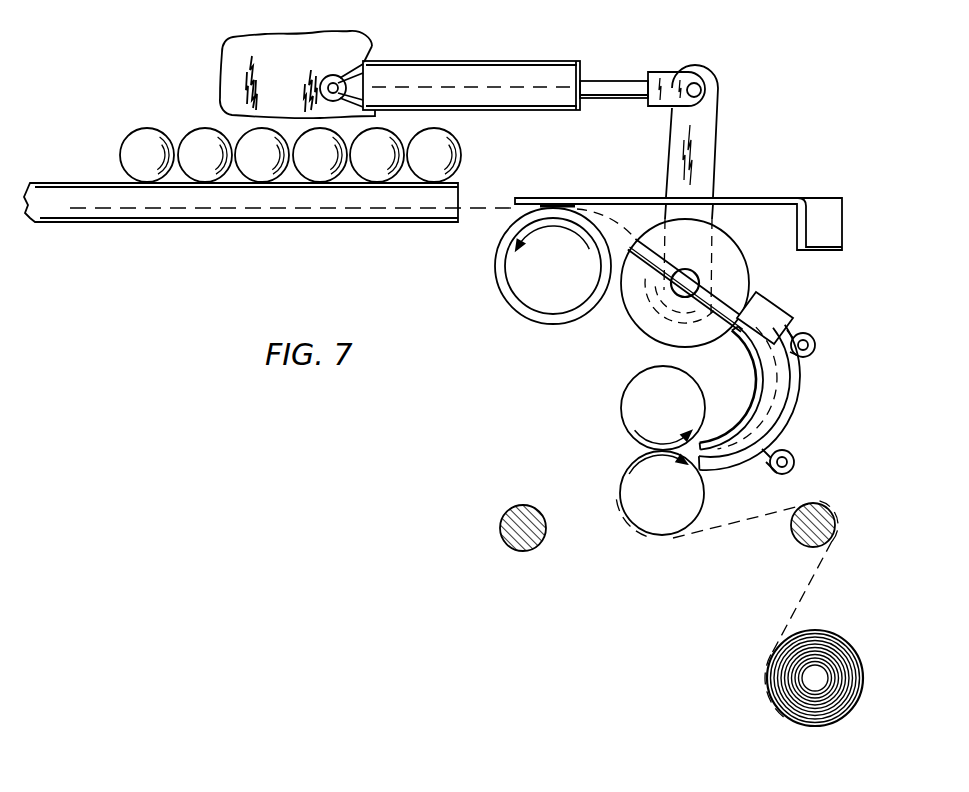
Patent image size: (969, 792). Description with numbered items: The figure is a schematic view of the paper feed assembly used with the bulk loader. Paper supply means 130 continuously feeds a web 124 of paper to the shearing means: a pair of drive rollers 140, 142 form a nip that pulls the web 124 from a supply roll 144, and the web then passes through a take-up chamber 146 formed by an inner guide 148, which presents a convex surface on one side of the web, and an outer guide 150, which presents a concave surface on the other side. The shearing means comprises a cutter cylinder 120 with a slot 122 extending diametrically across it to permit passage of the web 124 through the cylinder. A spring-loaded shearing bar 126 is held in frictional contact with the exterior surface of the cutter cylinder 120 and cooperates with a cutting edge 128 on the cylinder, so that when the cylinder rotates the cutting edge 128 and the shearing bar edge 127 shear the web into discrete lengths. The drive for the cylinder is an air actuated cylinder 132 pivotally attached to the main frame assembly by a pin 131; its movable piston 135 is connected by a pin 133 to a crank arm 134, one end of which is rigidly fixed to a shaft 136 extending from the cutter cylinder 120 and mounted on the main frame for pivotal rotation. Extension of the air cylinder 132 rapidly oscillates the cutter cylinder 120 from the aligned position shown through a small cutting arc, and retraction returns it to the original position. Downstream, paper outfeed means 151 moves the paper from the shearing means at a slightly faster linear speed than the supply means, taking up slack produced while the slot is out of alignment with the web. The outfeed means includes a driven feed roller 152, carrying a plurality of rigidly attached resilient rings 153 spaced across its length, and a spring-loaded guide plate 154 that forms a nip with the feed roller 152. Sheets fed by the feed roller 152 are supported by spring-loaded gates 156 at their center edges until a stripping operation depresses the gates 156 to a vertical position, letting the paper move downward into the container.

The cutter cylinder 120 is at (648, 325).
The slot 122 is at (638, 316).
The web 124 is at (808, 587).
The spring-loaded shearing bar 126 is at (812, 336).
The shearing bar edge 127 is at (770, 300).
The cutting edge 128 is at (731, 338).
The paper feeding means 130 is at (604, 449).
The pin 131 is at (360, 60).
The air actuated cylinder 132 is at (517, 60).
The pin 133 is at (702, 88).
The crank arm 134 is at (718, 170).
The movable piston 135 is at (615, 80).
The shaft 136 is at (727, 280).
The drive roller 140 is at (620, 416).
The drive roller 142 is at (703, 507).
The supply roll 144 is at (813, 723).
The take-up chamber 146 is at (792, 422).
The inner guide 148 is at (747, 403).
The outer guide 150 is at (797, 400).
The paper outfeed means 151 is at (502, 217).
The driven feed roller 152 is at (527, 312).
The resilient rings 153 is at (498, 290).
The spring-loaded guide plate 154 is at (545, 197).
The spring-loaded gates 156 is at (320, 223).